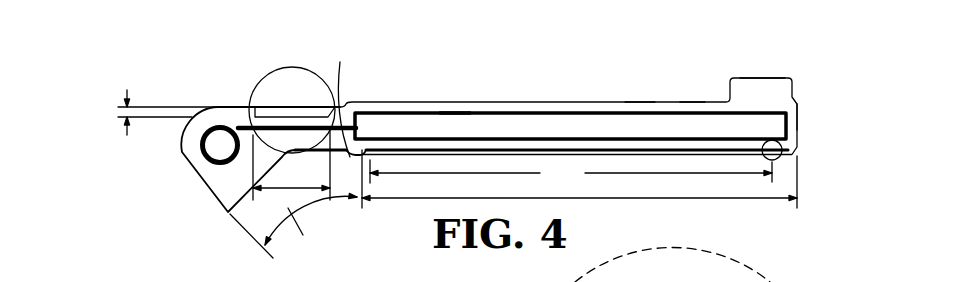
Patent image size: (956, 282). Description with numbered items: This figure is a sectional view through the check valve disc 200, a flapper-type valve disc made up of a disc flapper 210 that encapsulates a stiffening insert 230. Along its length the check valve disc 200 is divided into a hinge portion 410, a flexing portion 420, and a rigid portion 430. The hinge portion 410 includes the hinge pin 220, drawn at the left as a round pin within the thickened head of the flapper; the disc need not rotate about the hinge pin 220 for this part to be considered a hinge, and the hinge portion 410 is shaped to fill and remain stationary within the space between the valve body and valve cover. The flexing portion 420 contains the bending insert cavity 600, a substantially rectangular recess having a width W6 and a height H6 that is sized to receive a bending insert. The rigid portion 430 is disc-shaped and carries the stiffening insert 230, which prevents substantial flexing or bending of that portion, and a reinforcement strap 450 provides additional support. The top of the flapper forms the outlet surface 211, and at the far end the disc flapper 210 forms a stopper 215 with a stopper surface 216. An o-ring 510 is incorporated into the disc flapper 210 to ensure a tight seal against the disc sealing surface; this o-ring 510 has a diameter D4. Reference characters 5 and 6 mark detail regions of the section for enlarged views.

The wire 5 is at (778, 148).
The detail circle 6 is at (272, 73).
The check valve disc 200 is at (583, 103).
The disc flapper 210 is at (640, 103).
The outlet surface 211 is at (692, 103).
The stopper 215 is at (793, 90).
The stopper surface 216 is at (755, 78).
The hinge pin 220 is at (183, 148).
The stiffening insert 230 is at (505, 113).
The hinge portion 410 is at (277, 230).
The flexing portion 420 is at (325, 200).
The rigid portion 430 is at (560, 200).
The reinforcement strap 450 is at (457, 113).
The o-ring 510 is at (341, 98).
The bending insert cavity 600 is at (672, 264).
The width of bending insert cavity W6 is at (292, 188).
The height of bending insert cavity H6 is at (117, 107).
The diameter of o-ring D4 is at (571, 174).